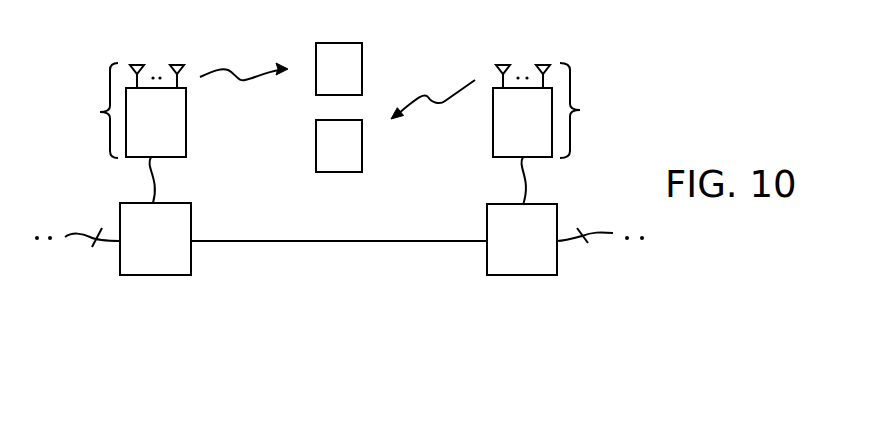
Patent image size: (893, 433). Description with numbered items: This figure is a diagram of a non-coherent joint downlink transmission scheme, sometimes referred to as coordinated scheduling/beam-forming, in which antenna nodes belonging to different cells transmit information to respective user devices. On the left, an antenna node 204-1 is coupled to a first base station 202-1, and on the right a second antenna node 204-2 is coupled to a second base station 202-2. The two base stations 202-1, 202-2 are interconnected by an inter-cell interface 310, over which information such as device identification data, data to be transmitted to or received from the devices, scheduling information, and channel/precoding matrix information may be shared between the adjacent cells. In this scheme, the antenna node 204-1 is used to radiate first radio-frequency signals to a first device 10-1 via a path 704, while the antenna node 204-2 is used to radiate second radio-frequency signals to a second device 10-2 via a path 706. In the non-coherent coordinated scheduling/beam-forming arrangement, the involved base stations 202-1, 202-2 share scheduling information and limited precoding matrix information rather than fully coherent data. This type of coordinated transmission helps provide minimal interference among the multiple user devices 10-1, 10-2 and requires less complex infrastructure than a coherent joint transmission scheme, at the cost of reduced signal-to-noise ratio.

The first device 10-1 is at (337, 43).
The second device 10-2 is at (337, 172).
The first base station 202-1 is at (157, 276).
The second base station 202-2 is at (522, 275).
The antenna node 204-1 is at (109, 110).
The antenna node 204-2 is at (570, 110).
The inter-cell interface 310 is at (328, 241).
The path 704 is at (228, 64).
The path 706 is at (433, 102).